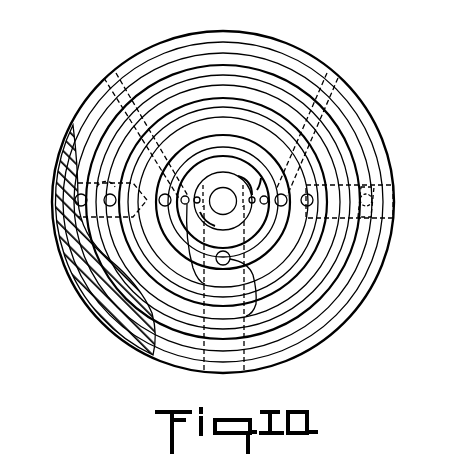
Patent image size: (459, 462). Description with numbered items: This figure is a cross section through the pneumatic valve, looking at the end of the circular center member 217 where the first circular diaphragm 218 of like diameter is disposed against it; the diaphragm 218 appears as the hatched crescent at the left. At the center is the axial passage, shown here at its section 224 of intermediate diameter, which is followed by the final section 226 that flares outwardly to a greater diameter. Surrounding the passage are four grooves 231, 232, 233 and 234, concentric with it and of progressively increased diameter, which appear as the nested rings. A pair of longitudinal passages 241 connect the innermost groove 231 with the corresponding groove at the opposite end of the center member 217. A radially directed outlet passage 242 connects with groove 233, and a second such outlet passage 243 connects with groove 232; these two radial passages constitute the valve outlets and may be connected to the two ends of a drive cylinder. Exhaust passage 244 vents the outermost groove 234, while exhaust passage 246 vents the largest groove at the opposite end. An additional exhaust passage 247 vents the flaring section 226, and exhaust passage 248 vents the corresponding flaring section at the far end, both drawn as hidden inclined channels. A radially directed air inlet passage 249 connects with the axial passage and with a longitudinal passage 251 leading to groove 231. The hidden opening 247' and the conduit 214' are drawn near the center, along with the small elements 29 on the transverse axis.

The circular center member 217 is at (99, 101).
The groove 234 is at (202, 53).
The groove 233 is at (283, 98).
The groove 232 is at (260, 115).
The groove 231 is at (186, 155).
The longitudinal passages 241 is at (262, 161).
The section of intermediate diameter 224 is at (238, 182).
The first circular diaphragm 218 is at (103, 305).
The exhaust passage 247 is at (146, 114).
The exhaust passage 248 is at (324, 102).
The radially directed outlet passage 242 is at (96, 172).
The exhaust passage 244 is at (74, 203).
The exhaust passage 246 is at (390, 186).
The outlet passage 243 is at (373, 221).
The ball elements 29 is at (420, 224).
The radially directed air inlet passage 249 is at (225, 362).
The passage opening 247' is at (216, 215).
The final section 226 is at (247, 237).
The conduit 214' is at (216, 249).
The longitudinal passage 251 is at (234, 294).